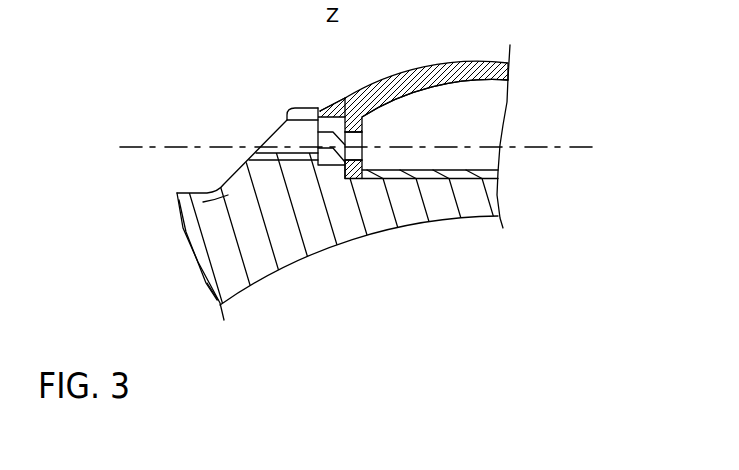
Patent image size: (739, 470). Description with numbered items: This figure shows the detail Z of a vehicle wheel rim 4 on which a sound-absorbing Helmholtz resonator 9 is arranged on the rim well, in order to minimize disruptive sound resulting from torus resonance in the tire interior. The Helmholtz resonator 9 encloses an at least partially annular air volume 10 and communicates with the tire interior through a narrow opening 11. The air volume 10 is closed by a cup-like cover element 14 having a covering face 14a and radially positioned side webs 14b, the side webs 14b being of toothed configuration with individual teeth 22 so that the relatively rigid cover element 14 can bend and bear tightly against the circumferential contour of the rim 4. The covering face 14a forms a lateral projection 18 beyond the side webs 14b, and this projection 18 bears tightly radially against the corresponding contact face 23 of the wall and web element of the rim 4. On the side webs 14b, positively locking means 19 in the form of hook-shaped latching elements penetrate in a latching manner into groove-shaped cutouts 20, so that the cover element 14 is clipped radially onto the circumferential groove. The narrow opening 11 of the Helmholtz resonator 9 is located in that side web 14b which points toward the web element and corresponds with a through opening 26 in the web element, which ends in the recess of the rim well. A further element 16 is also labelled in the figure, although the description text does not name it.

The rim 4 is at (279, 272).
The Helmholtz resonator 9 is at (539, 91).
The air volume 10 is at (489, 111).
The opening 11 is at (366, 137).
The cover element 14 is at (423, 146).
The covering face 14a is at (468, 70).
The side webs 14b is at (353, 177).
The inner surface 16 is at (432, 110).
The lateral projection 18 is at (327, 110).
The positively locking means 19 is at (212, 158).
The teeth 22 is at (318, 140).
The groove-shaped cutouts 20 is at (316, 164).
The contact face 23 is at (342, 98).
The through opening 26 is at (282, 131).